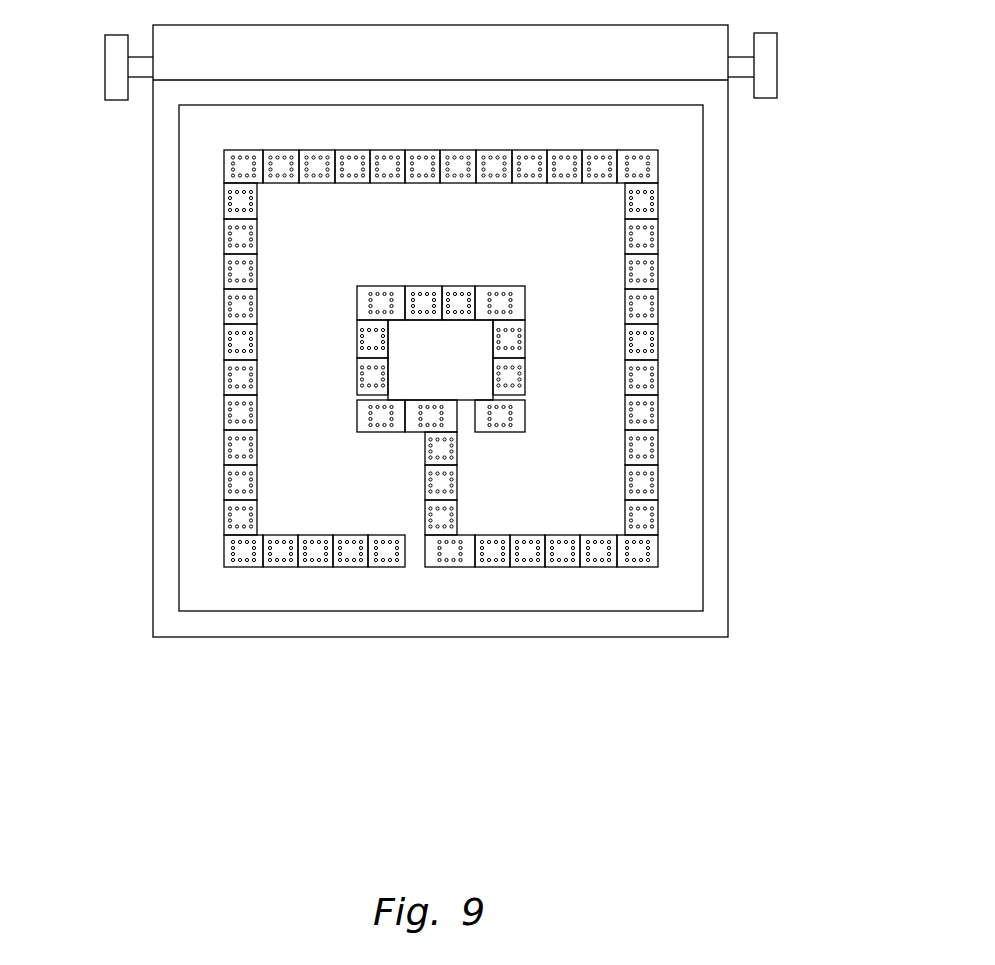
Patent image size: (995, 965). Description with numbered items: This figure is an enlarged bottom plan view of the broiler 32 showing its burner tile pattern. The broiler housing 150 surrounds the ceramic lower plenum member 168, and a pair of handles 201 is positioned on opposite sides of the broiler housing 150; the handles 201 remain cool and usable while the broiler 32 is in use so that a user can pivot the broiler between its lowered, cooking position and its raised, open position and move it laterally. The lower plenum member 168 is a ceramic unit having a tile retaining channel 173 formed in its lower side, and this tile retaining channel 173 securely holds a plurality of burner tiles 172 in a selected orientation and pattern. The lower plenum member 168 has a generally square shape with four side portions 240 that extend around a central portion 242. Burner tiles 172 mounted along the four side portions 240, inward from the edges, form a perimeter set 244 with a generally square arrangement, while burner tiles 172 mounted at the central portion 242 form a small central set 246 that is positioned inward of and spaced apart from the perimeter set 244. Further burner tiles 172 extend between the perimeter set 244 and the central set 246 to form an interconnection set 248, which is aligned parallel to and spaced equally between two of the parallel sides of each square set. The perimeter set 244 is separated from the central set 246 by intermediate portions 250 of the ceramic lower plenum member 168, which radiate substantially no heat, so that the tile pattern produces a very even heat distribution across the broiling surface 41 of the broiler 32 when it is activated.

The broiler 32 is at (735, 308).
The broiling surface 41 is at (344, 520).
The broiler housing 150 is at (730, 420).
The lower plenum member 168 is at (600, 488).
The burner tiles 172 is at (645, 271).
The tile retaining channel 173 is at (562, 552).
The handles 201 is at (113, 85).
The side portions 240 is at (193, 388).
The central portion 242 is at (443, 330).
The perimeter set 244 is at (660, 357).
The central set 246 is at (370, 343).
The interconnection set 248 is at (422, 485).
The intermediate portions 250 is at (345, 241).